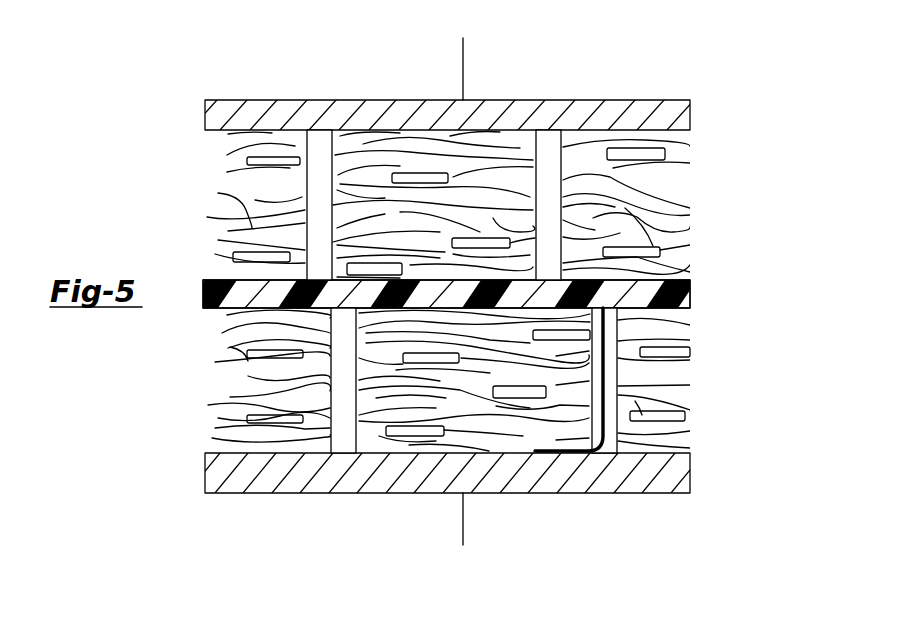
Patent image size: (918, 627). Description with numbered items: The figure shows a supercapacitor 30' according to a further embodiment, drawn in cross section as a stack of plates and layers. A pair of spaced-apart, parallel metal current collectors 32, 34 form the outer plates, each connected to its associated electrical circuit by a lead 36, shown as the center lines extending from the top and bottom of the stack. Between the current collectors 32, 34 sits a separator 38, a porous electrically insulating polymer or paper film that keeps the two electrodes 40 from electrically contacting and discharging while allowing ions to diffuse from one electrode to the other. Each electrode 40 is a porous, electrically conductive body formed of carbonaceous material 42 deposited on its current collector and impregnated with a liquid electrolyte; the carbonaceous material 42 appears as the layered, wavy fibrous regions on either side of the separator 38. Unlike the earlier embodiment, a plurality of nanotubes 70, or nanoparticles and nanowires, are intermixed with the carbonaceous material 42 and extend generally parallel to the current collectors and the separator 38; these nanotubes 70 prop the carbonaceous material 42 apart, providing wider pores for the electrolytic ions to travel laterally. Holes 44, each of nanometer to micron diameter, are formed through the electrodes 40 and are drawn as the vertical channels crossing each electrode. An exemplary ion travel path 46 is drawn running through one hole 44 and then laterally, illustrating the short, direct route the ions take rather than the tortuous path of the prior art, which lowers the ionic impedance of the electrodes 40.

The supercapacitor 30' is at (212, 35).
The metal current collector 32 is at (289, 100).
The metal current collector 34 is at (245, 493).
The lead 36 is at (463, 73).
The separator 38 is at (403, 280).
The electrode 40 is at (690, 241).
The carbonaceous material 42 is at (263, 186).
The hole 44 is at (330, 150).
The ion travel path 46 is at (604, 345).
The nanotube 70 is at (613, 168).